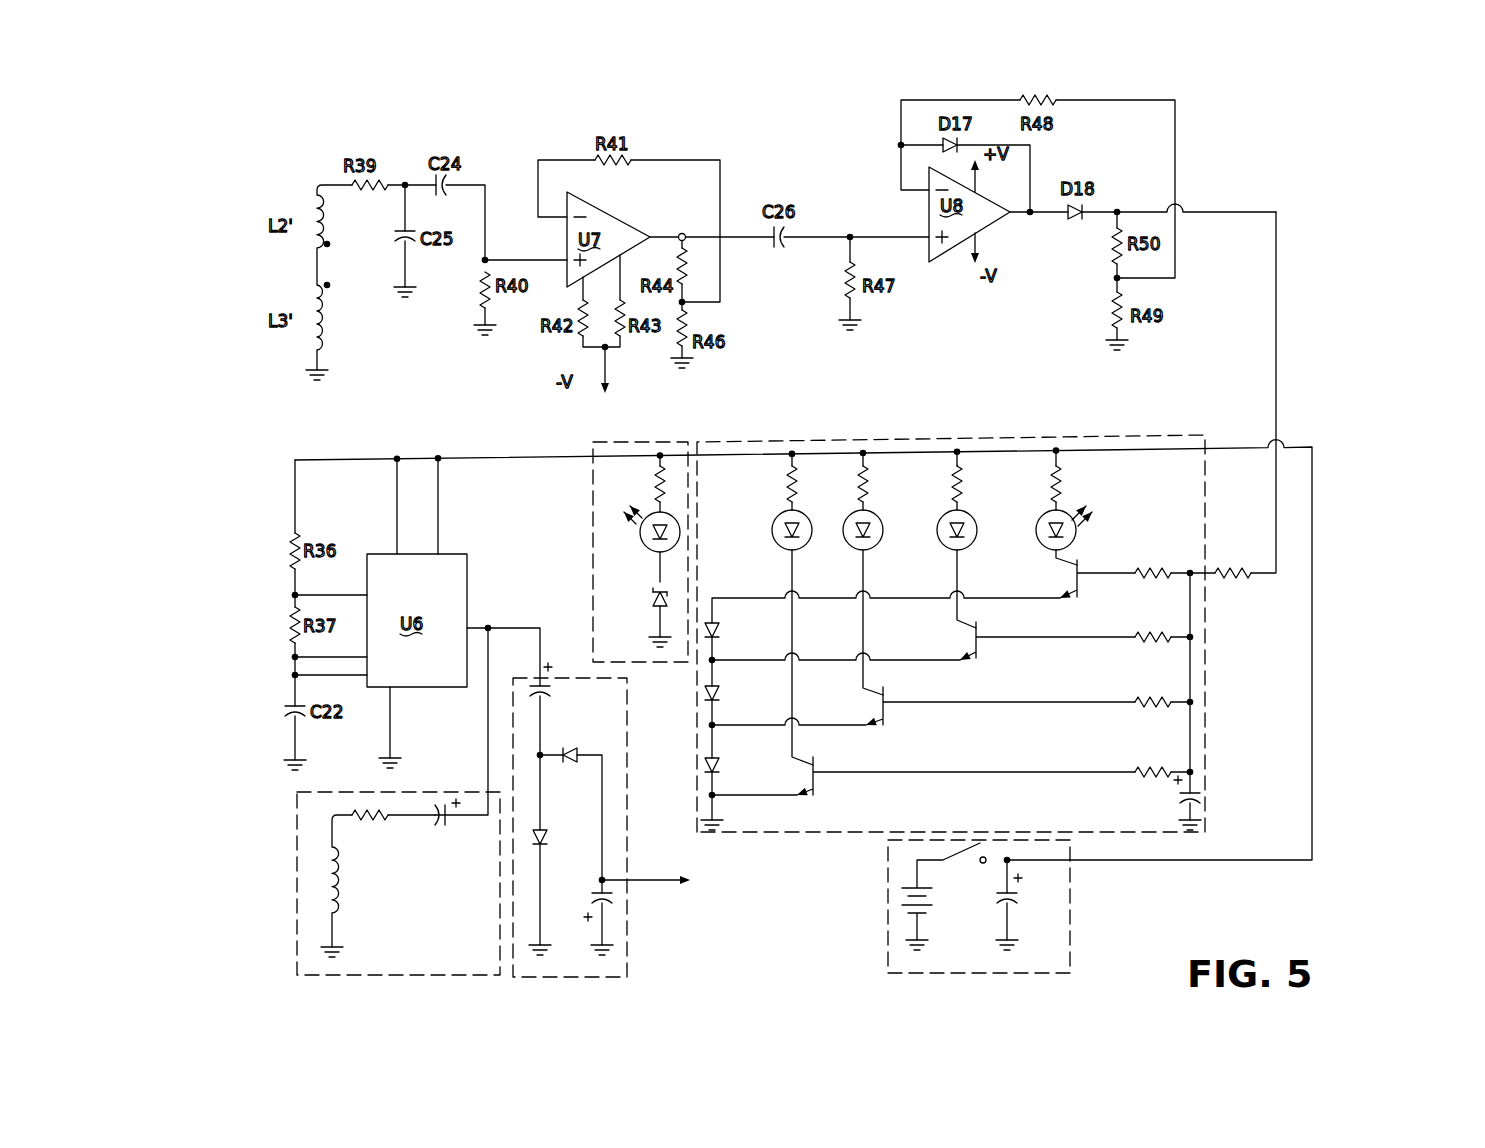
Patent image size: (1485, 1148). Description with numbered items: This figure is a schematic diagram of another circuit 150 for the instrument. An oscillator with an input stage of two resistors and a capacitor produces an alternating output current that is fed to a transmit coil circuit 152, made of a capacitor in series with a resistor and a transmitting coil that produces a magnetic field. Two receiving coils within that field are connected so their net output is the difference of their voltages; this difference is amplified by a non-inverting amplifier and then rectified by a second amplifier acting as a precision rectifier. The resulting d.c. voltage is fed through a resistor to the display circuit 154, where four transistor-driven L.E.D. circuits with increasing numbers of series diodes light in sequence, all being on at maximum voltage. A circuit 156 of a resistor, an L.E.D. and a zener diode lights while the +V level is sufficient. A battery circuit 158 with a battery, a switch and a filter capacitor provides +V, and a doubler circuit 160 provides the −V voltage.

The circuit 150 is at (1333, 436).
The transmit coil circuit 152 is at (297, 919).
The display circuit 154 is at (1150, 434).
The circuit 156 is at (639, 442).
The battery circuit 158 is at (1070, 893).
The doubler circuit 160 is at (627, 922).